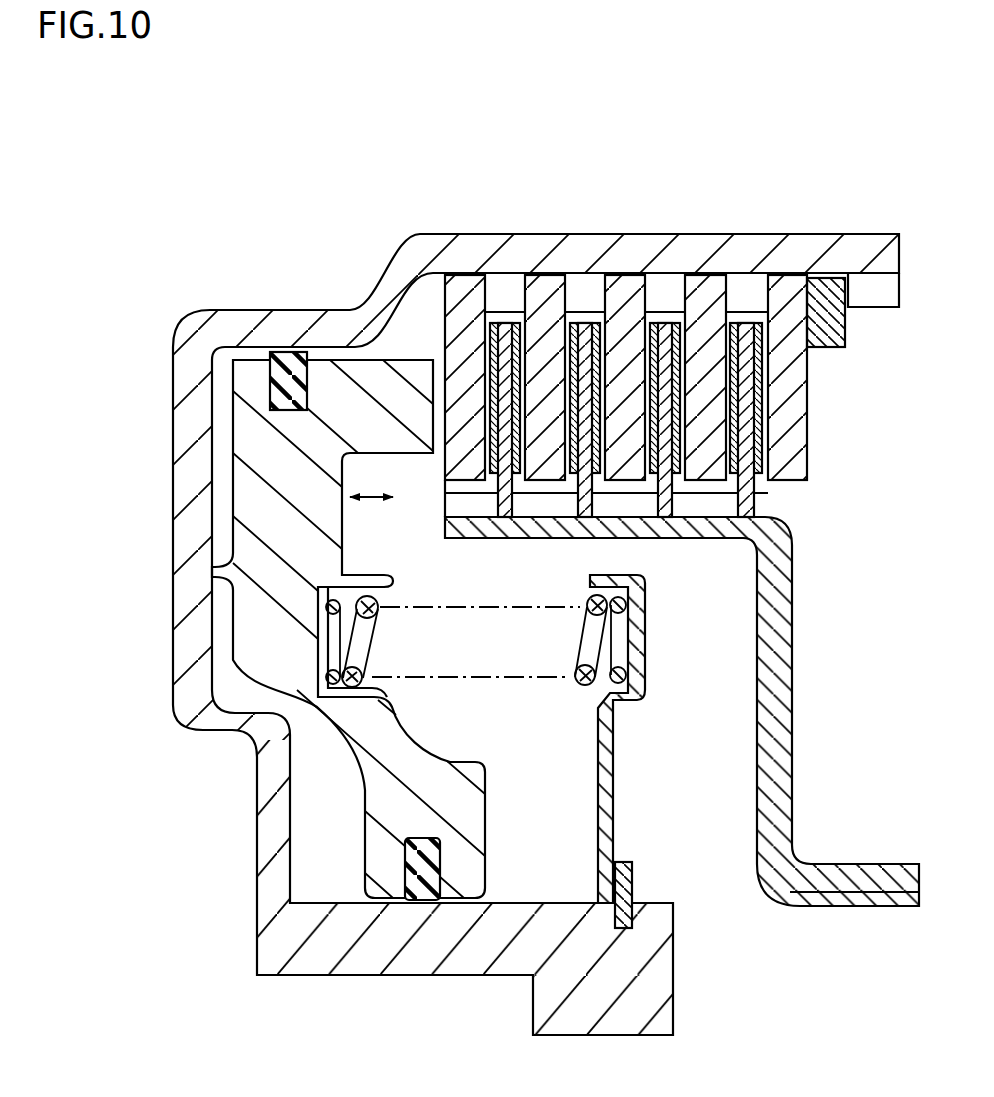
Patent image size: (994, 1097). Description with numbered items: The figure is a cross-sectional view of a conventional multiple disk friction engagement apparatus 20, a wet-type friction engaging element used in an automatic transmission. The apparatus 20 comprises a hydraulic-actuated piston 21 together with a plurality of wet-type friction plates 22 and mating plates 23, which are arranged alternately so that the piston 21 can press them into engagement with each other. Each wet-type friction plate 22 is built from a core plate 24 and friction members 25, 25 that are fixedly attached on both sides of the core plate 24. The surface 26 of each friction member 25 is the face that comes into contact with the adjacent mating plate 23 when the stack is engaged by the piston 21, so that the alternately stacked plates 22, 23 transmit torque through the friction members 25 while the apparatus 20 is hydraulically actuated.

The multiple disk friction engagement apparatus 20 is at (594, 232).
The hydraulic-actuated piston 21 is at (347, 354).
The wet-type friction plate 22 is at (654, 324).
The mating plate 23 is at (445, 288).
The core plate 24 is at (745, 318).
The friction member 25 is at (733, 305).
The surface of the friction member 26 is at (730, 408).